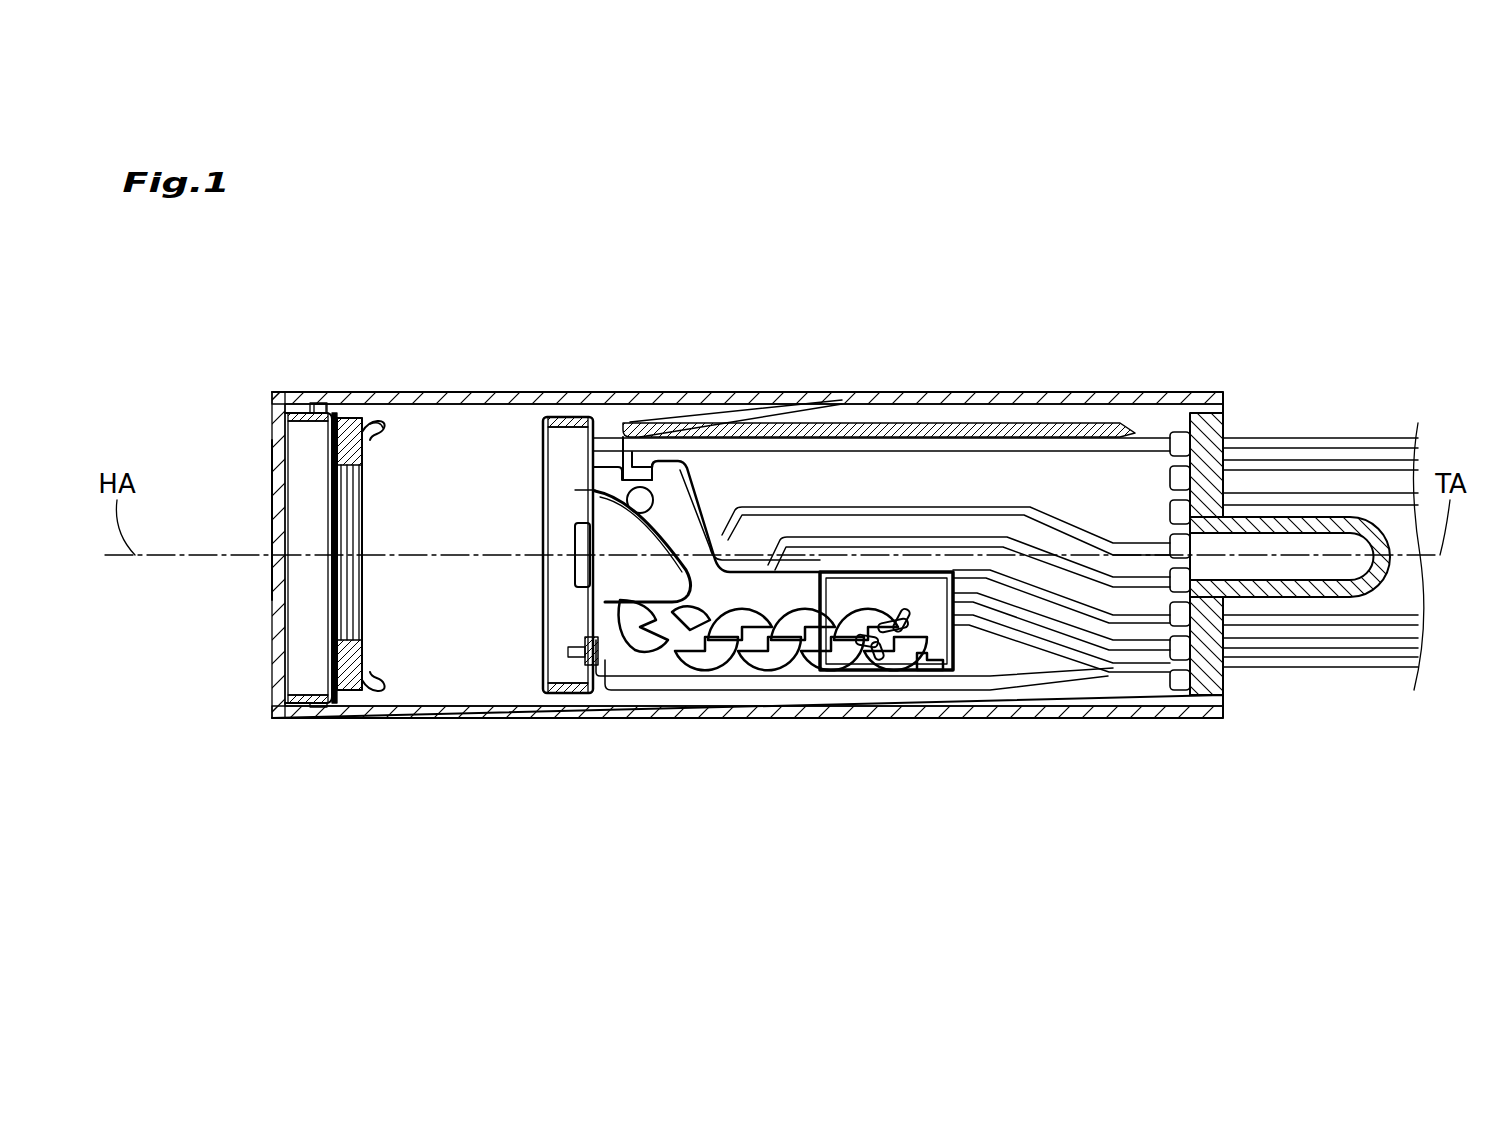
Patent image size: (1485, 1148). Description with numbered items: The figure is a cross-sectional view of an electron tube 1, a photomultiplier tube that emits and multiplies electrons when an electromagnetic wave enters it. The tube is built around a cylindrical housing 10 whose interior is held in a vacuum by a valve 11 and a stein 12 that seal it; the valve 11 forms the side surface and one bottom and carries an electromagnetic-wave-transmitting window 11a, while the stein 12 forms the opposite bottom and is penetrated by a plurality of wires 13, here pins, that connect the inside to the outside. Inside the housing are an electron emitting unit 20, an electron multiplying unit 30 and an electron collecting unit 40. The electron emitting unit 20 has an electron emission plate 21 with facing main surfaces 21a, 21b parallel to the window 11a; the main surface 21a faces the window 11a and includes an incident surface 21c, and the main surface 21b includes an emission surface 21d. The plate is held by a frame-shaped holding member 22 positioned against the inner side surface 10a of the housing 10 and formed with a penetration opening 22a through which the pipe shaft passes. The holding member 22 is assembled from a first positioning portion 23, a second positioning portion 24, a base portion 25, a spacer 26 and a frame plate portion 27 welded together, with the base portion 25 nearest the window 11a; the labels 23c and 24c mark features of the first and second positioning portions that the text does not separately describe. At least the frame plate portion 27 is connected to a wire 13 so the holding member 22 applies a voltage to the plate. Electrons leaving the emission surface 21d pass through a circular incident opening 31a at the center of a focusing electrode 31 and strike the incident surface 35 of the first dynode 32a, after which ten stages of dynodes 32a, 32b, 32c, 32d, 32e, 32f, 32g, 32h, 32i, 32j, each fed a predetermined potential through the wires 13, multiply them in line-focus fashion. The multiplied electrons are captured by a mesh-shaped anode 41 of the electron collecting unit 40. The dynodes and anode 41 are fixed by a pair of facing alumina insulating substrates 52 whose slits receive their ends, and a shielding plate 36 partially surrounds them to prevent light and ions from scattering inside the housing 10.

The electron tube 1 is at (1033, 287).
The housing 10 is at (1113, 323).
The inner side surface 10a is at (482, 399).
The valve 11 is at (1133, 392).
The window 11a is at (272, 512).
The stein 12 is at (1200, 415).
The wires 13 is at (1410, 440).
The electron emitting unit 20 is at (366, 414).
The electron emission plate 21 is at (178, 572).
The main surface 21a is at (353, 596).
The main surface 21b is at (359, 612).
The incident surface 21c is at (346, 584).
The emission surface 21d is at (340, 572).
The holding member 22 is at (254, 794).
The penetration opening 22a is at (336, 487).
The first positioning portion 23 is at (370, 706).
The hook tip 23c is at (385, 431).
The second positioning portion 24 is at (345, 706).
The pressing plate projection 24c is at (316, 401).
The base portion 25 is at (296, 706).
The spacer 26 is at (338, 706).
The frame plate portion 27 is at (350, 706).
The electron multiplying unit 30 is at (1035, 807).
The focusing electrode 31 is at (548, 706).
The incident opening 31a is at (620, 468).
The dynode 32a is at (622, 632).
The dynode 32b is at (690, 625).
The dynode 32c is at (706, 650).
The dynode 32d is at (740, 625).
The dynode 32e is at (770, 652).
The dynode 32f is at (803, 625).
The dynode 32g is at (836, 652).
The dynode 32h is at (866, 620).
The dynode 32i is at (896, 655).
The dynode 32j is at (932, 662).
The incident surface 35 is at (704, 518).
The shielding plate 36 is at (857, 572).
The electron collecting unit 40 is at (960, 668).
The anode 41 is at (925, 612).
The insulating substrates 52 is at (656, 535).